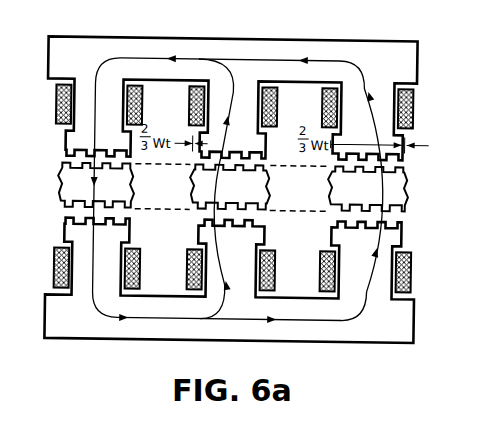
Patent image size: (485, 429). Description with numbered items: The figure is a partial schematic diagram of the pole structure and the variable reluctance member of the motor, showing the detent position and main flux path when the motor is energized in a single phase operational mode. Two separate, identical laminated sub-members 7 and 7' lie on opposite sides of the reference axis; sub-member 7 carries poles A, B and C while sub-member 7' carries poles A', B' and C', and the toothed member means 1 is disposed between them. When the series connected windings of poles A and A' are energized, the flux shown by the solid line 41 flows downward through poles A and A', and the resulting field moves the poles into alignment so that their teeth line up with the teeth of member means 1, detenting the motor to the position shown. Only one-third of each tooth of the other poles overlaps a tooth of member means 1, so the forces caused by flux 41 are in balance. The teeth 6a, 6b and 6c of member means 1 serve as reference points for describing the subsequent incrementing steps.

The flux path 41 is at (195, 59).
The sub-member 7 is at (243, 98).
The sub-member 7' is at (238, 280).
The member means 1 is at (235, 187).
The tooth 6a is at (64, 174).
The tooth 6b is at (191, 175).
The tooth 6c is at (328, 196).